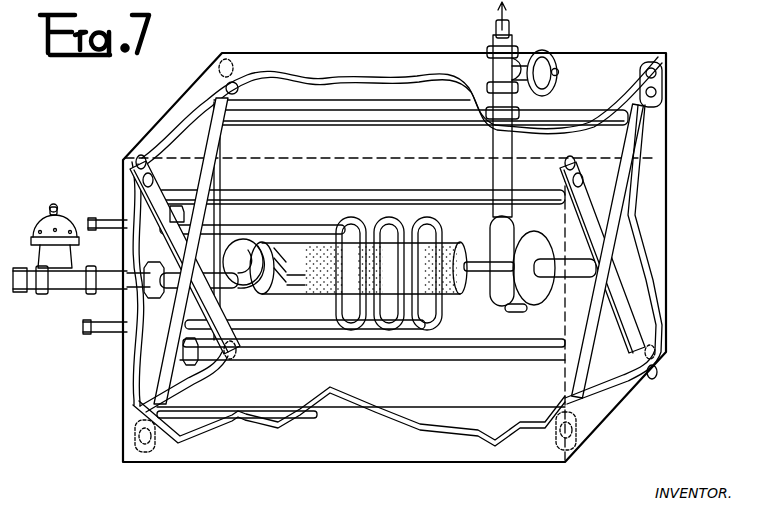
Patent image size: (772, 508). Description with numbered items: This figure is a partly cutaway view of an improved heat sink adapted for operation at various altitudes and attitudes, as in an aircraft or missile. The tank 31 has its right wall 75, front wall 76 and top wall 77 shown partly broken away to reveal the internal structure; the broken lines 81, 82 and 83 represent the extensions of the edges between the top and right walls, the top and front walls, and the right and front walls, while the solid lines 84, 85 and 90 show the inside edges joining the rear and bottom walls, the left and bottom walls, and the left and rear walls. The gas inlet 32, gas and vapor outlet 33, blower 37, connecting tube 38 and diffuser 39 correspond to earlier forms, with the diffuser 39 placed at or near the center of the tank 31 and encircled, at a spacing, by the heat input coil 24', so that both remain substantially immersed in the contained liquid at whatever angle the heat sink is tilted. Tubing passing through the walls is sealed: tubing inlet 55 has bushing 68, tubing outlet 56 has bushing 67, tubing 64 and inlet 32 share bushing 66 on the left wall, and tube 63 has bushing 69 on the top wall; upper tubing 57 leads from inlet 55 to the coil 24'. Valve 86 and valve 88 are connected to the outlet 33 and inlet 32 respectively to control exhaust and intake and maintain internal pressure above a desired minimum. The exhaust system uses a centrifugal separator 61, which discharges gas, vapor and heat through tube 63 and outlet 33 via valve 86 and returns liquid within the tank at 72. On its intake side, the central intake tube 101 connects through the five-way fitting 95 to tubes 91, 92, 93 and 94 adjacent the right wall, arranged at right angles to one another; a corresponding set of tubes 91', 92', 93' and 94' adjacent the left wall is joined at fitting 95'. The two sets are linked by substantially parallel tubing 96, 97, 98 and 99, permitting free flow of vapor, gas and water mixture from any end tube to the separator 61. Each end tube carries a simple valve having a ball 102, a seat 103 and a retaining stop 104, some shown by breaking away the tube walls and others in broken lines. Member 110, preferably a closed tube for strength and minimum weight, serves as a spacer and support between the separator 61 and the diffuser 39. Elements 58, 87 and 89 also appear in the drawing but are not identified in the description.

The heat input coil 24' is at (311, 273).
The tank 31 is at (655, 243).
The gas inlet 32 is at (20, 292).
The gas and vapor outlet 33 is at (494, 33).
The blower 37 is at (262, 294).
The connecting tube 38 is at (292, 294).
The diffuser 39 is at (342, 294).
The tubing inlet 55 is at (90, 222).
The tubing outlet 56 is at (88, 334).
The upper tubing 57 is at (344, 224).
The cylinder section 58 is at (318, 294).
The centrifugal separator 61 is at (496, 295).
The tube 63 is at (493, 158).
The tubing 64 is at (230, 288).
The bushing 66 is at (144, 292).
The bushing 67 is at (194, 350).
The bushing 68 is at (176, 206).
The bushing 69 is at (520, 112).
The liquid return 72 is at (527, 309).
The right wall 75 is at (652, 200).
The front wall 76 is at (132, 243).
The top wall 77 is at (205, 93).
The broken line 81 is at (628, 92).
The broken line 82 is at (272, 158).
The broken line 83 is at (548, 240).
The solid line 84 is at (528, 347).
The solid line 85 is at (196, 378).
The control valve 86 is at (538, 52).
The gauge fitting 87 is at (560, 68).
The valve 88 is at (38, 226).
The valve nipple 89 is at (53, 204).
The solid line 90 is at (224, 184).
The tube 91 is at (602, 257).
The tube 91' is at (185, 244).
The tube 92 is at (608, 251).
The tube 92' is at (191, 251).
The tube 93 is at (683, 315).
The tube 93' is at (248, 350).
The tube 94 is at (648, 402).
The tube 94' is at (186, 378).
The five-way fitting 95 is at (678, 275).
The fitting 95' is at (229, 262).
The connecting tubing 96 is at (410, 190).
The connecting tubing 97 is at (400, 110).
The connecting tubing 98 is at (550, 360).
The connecting tubing 99 is at (522, 424).
The central intake tube 101 is at (578, 278).
The ball 102 is at (240, 90).
The seat 103 is at (219, 63).
The retaining stop 104 is at (228, 94).
The spacer and support member 110 is at (468, 262).